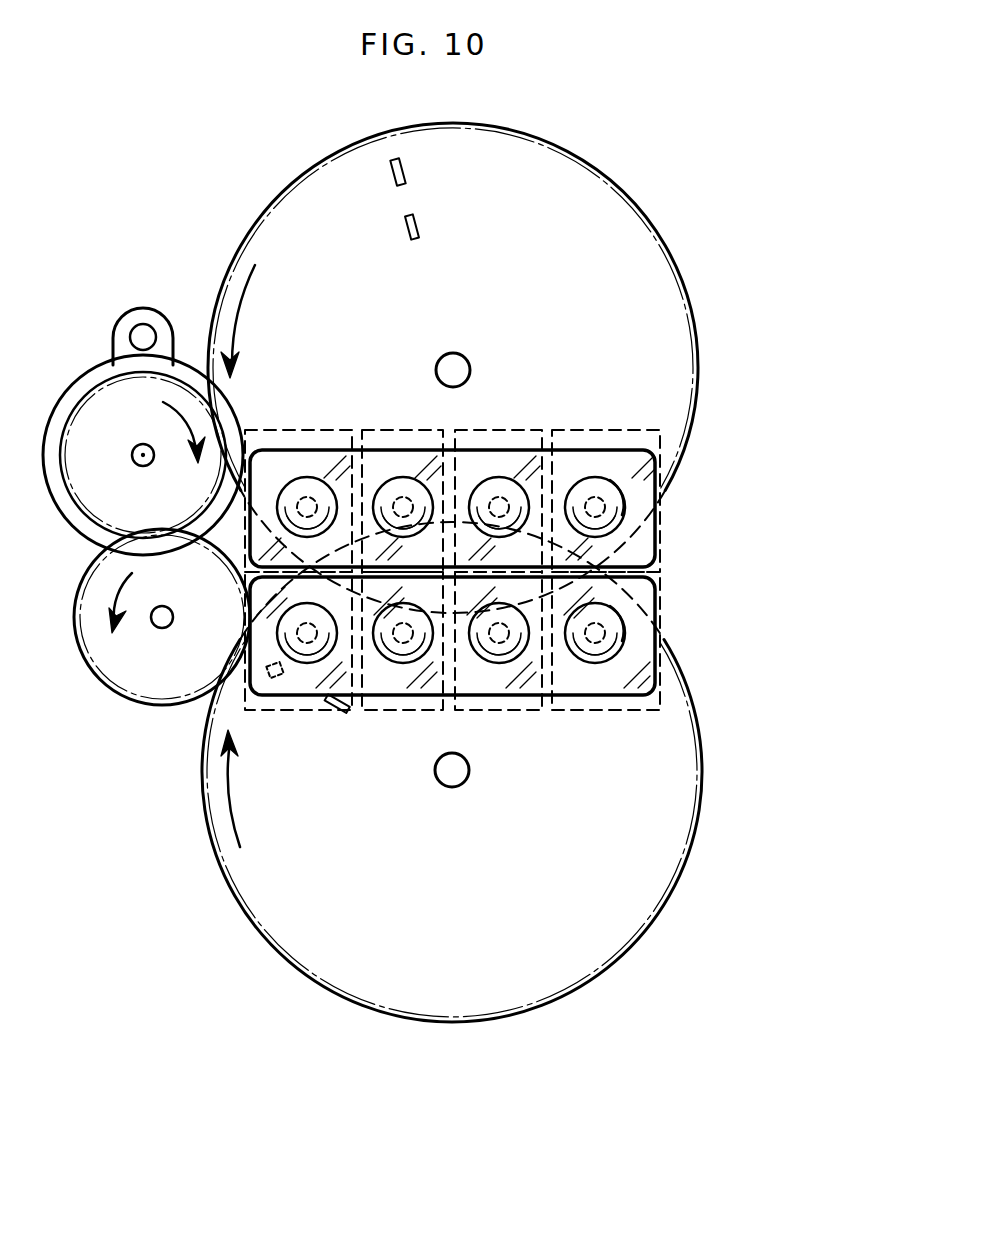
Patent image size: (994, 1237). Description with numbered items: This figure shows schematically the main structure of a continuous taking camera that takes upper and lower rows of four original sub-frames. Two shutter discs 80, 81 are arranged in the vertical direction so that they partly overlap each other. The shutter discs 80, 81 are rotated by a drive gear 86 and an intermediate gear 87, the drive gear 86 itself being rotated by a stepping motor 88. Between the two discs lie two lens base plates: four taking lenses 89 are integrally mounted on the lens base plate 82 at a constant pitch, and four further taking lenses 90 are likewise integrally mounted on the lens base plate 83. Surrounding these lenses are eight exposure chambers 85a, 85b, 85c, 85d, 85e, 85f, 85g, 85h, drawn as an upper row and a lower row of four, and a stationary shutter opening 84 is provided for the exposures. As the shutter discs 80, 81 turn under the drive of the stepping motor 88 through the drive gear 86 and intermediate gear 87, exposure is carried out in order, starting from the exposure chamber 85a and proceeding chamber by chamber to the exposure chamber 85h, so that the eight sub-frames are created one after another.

The shutter disc 80 is at (606, 183).
The shutter disc 81 is at (620, 925).
The lens base plate 82 is at (638, 553).
The lens base plate 83 is at (642, 660).
The stationary shutter opening 84 is at (307, 500).
The exposure chamber 85a is at (272, 712).
The exposure chamber 85b is at (412, 712).
The exposure chamber 85c is at (503, 712).
The exposure chamber 85d is at (608, 712).
The exposure chamber 85e is at (263, 430).
The exposure chamber 85f is at (403, 430).
The exposure chamber 85g is at (501, 430).
The exposure chamber 85h is at (619, 430).
The drive gear 86 is at (107, 397).
The intermediate gear 87 is at (136, 680).
The stepping motor 88 is at (67, 500).
The taking lens 89 is at (623, 497).
The taking lens 90 is at (623, 625).